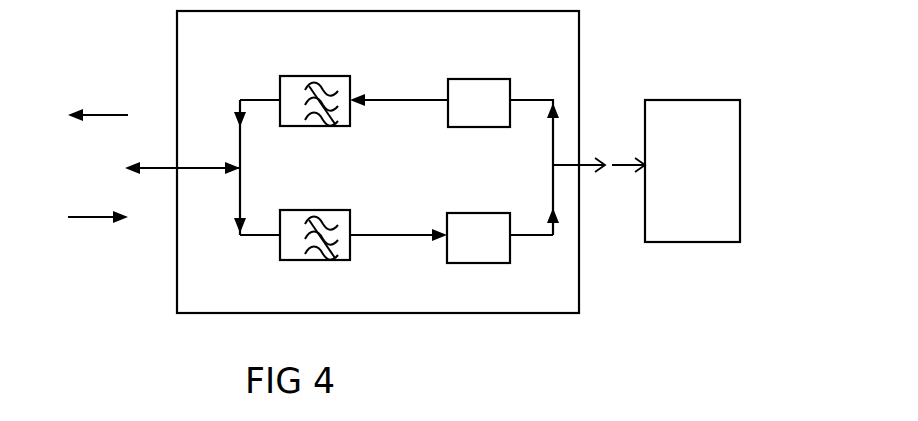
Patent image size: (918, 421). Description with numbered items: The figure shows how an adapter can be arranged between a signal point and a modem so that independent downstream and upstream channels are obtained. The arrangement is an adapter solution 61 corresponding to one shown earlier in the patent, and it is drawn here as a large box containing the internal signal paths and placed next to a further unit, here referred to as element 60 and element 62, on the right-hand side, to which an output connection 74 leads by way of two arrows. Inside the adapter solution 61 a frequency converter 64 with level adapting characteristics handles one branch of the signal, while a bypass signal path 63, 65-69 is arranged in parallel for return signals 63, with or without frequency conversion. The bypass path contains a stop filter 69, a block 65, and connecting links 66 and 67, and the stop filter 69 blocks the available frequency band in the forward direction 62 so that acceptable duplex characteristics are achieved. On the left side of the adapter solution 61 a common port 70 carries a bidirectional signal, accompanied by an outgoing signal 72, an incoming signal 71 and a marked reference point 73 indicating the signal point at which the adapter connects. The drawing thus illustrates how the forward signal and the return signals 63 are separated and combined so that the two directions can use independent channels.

The communication device 60 is at (697, 287).
The adapter solution 61 is at (580, 286).
The forward direction 62 is at (745, 212).
The return signals 63 is at (532, 97).
The frequency converter 64 is at (500, 210).
The bypass signal path element 65 is at (470, 130).
The bypass signal path element 66 is at (372, 230).
The bypass signal path element 67 is at (416, 107).
The stop filter 69 is at (355, 75).
The antenna port 70 is at (162, 182).
The incoming signal 71 is at (88, 220).
The outgoing signal 72 is at (97, 105).
The reference point X 73 is at (40, 152).
The output connection 74 is at (595, 178).